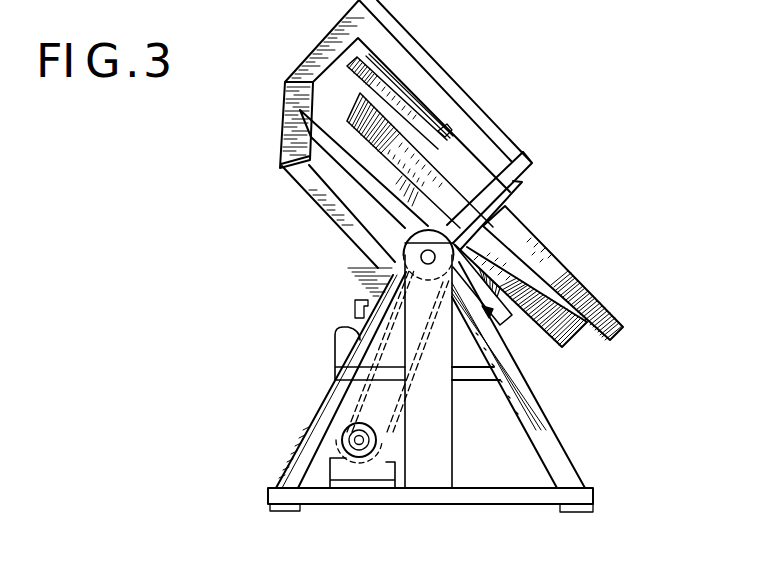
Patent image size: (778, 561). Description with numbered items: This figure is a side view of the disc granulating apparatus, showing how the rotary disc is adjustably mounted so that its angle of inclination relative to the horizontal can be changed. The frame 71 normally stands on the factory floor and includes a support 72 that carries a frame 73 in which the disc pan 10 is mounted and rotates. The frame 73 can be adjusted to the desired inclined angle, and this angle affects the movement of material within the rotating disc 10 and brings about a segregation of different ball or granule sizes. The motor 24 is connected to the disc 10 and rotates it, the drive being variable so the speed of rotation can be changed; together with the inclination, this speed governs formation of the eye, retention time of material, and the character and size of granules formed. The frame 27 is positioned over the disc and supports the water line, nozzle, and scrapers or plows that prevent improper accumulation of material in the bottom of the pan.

The disc pan 10 is at (578, 344).
The motor 24 is at (333, 469).
The frame 27 is at (408, 50).
The frame 71 is at (550, 455).
The support 72 is at (421, 257).
The frame 73 is at (337, 135).